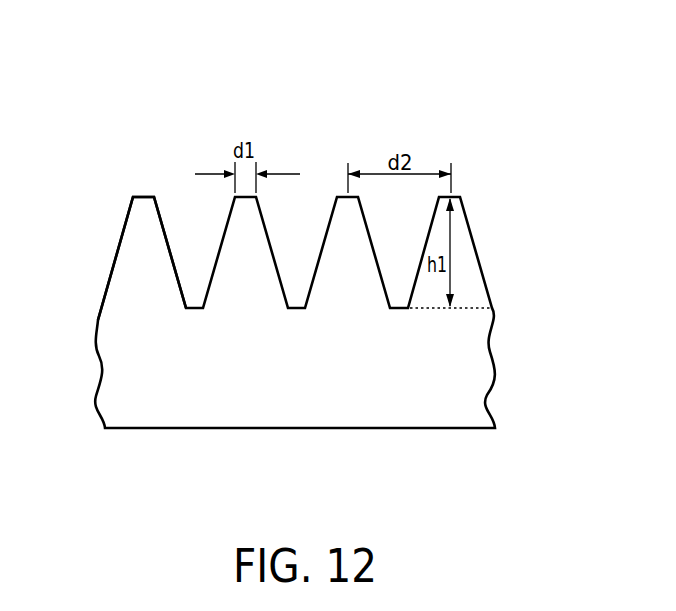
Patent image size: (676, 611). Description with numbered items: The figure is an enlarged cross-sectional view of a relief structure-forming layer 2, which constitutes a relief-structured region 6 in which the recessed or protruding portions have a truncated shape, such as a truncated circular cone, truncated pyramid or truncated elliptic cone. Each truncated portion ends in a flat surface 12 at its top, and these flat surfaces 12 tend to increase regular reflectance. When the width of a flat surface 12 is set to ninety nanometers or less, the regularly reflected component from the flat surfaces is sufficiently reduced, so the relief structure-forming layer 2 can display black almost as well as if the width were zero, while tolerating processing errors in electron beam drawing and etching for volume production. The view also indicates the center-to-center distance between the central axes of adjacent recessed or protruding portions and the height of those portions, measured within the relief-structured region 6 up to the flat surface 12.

The relief structure-forming layer 2 is at (301, 124).
The relief-structured region 6 is at (480, 253).
The flat surface 12 is at (143, 197).